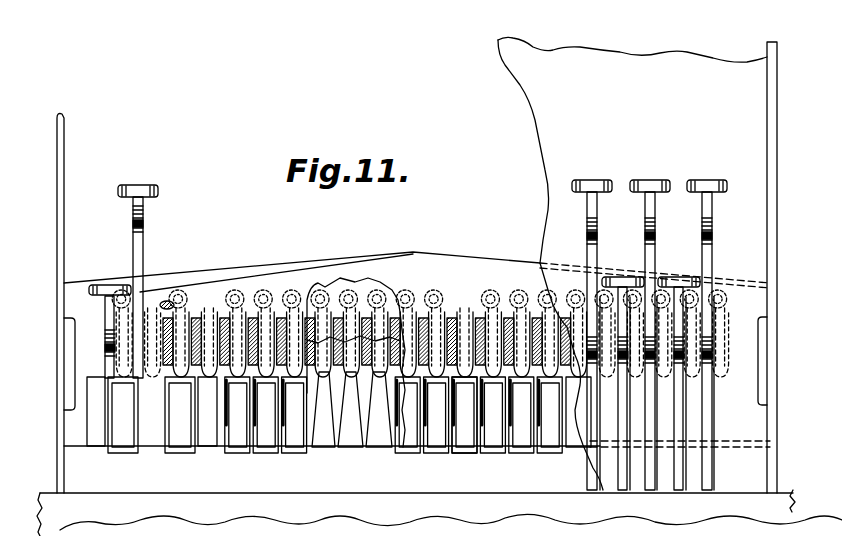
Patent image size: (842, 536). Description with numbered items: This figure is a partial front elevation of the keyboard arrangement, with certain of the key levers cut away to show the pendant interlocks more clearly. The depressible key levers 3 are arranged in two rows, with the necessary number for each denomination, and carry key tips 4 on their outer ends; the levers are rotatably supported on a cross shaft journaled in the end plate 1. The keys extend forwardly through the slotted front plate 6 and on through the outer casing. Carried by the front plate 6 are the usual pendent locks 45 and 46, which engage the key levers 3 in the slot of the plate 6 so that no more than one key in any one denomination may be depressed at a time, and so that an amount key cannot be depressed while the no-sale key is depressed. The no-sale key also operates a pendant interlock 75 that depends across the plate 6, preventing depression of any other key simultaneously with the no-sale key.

The end plate 1 is at (58, 162).
The key levers 3 is at (137, 265).
The key tips 4 is at (134, 187).
The slotted front plate 6 is at (204, 277).
The pendant interlock 75 is at (258, 278).
The pendent lock 45 is at (475, 372).
The pendent lock 46 is at (380, 444).